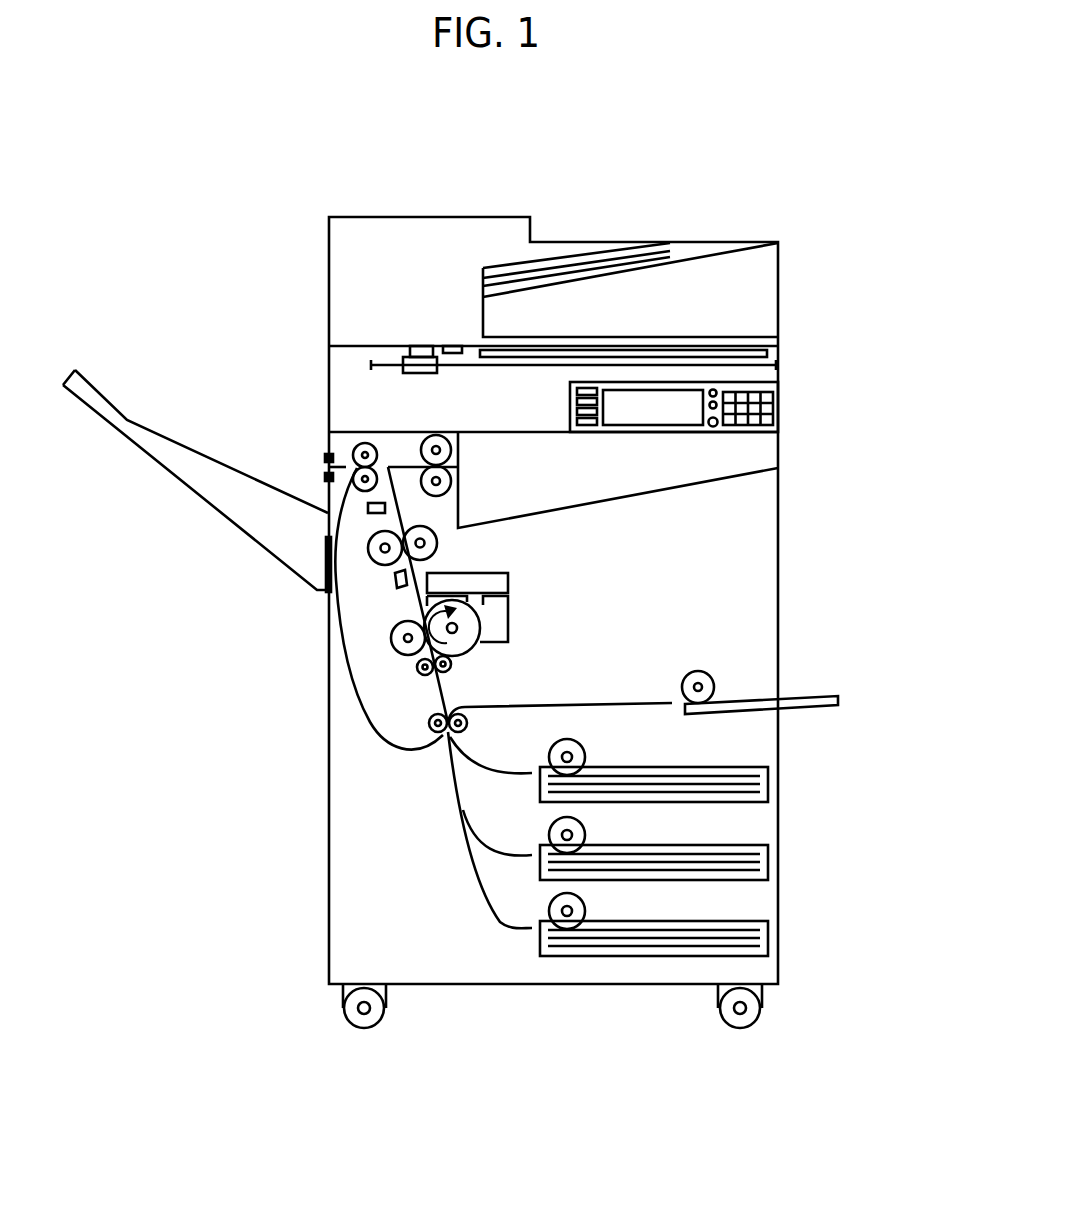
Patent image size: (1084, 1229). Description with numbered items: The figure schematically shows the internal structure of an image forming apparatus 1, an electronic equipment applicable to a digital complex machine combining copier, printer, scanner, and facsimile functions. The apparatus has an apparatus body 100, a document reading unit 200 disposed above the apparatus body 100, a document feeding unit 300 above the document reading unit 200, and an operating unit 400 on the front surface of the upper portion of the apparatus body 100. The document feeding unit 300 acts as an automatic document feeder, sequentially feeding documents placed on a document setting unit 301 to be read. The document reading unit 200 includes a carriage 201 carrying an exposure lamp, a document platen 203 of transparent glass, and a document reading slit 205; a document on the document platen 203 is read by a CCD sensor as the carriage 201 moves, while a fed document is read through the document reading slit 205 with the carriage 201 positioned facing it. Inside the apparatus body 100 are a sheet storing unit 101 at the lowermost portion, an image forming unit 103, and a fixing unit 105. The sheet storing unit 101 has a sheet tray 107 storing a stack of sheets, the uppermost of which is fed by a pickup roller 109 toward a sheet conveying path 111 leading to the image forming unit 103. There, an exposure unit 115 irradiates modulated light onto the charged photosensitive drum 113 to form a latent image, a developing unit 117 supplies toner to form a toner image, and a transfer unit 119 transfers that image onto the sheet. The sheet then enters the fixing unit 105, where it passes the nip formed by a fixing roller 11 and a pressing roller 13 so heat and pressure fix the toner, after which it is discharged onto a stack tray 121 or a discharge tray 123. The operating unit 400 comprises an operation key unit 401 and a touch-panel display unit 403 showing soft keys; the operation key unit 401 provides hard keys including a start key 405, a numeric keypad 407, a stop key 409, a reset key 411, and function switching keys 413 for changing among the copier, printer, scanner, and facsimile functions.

The image forming apparatus 1 is at (148, 215).
The apparatus body 100 is at (752, 614).
The sheet storing unit 101 is at (681, 844).
The image forming unit 103 is at (374, 621).
The fixing unit 105 is at (363, 571).
The sheet tray 107 is at (766, 940).
The pickup roller 109 is at (588, 757).
The sheet conveying path 111 is at (442, 690).
The photosensitive drum 113 is at (462, 655).
The exposure unit 115 is at (508, 583).
The developing unit 117 is at (508, 620).
The transfer unit 119 is at (402, 655).
The stack tray 121 is at (240, 535).
The discharge tray 123 is at (620, 502).
The fixing roller 11 is at (438, 543).
The pressing roller 13 is at (350, 514).
The document reading unit 200 is at (533, 369).
The carriage 201 is at (418, 375).
The document platen 203 is at (770, 352).
The document reading slit 205 is at (417, 347).
The document feeding unit 300 is at (630, 240).
The document setting unit 301 is at (696, 249).
The operating unit 400 is at (698, 394).
The operation key unit 401 is at (786, 430).
The display unit 403 is at (628, 412).
The start key 405 is at (711, 426).
The numeric keypad 407 is at (730, 425).
The stop key 409 is at (710, 402).
The reset key 411 is at (794, 421).
The function switching keys 413 is at (577, 412).